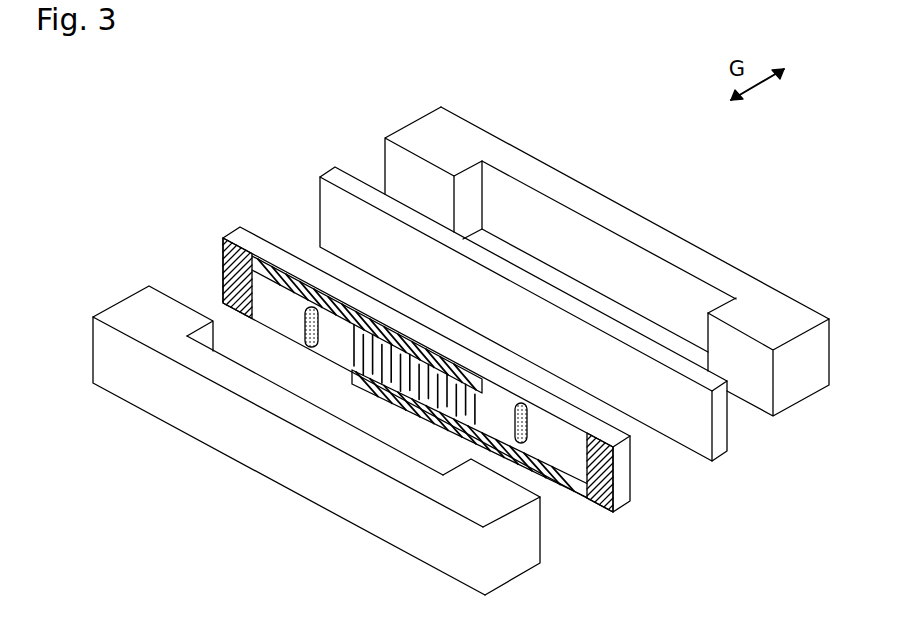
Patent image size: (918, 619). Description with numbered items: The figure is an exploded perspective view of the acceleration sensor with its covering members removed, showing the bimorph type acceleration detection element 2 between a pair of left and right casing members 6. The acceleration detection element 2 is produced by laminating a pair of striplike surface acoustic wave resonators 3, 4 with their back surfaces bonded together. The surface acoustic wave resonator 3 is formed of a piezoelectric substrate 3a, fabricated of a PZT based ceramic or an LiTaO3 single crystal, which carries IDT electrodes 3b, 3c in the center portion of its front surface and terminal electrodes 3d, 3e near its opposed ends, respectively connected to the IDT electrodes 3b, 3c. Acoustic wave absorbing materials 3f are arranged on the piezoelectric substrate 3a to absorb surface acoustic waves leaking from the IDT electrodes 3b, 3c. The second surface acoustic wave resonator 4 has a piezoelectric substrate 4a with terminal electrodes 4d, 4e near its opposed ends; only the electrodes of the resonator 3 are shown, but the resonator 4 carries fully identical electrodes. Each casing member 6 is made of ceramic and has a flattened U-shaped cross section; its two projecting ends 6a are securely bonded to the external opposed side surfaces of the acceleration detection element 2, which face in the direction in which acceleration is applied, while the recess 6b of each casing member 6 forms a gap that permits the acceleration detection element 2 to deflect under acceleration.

The acceleration detection element 2 is at (742, 528).
The surface acoustic wave resonator 3 is at (437, 386).
The piezoelectric substrate 3a is at (633, 510).
The IDT electrode 3b is at (350, 355).
The IDT electrode 3c is at (372, 372).
The terminal electrode 3d is at (222, 263).
The terminal electrode 3e is at (596, 515).
The acoustic wave absorbing material 3f is at (307, 312).
The surface acoustic wave resonator 4 is at (552, 302).
The piezoelectric substrate 4a is at (660, 430).
The terminal electrode 4d is at (348, 173).
The terminal electrode 4e is at (716, 380).
The casing member 6 is at (457, 328).
The projecting end 6a is at (413, 167).
The recess 6b is at (523, 197).